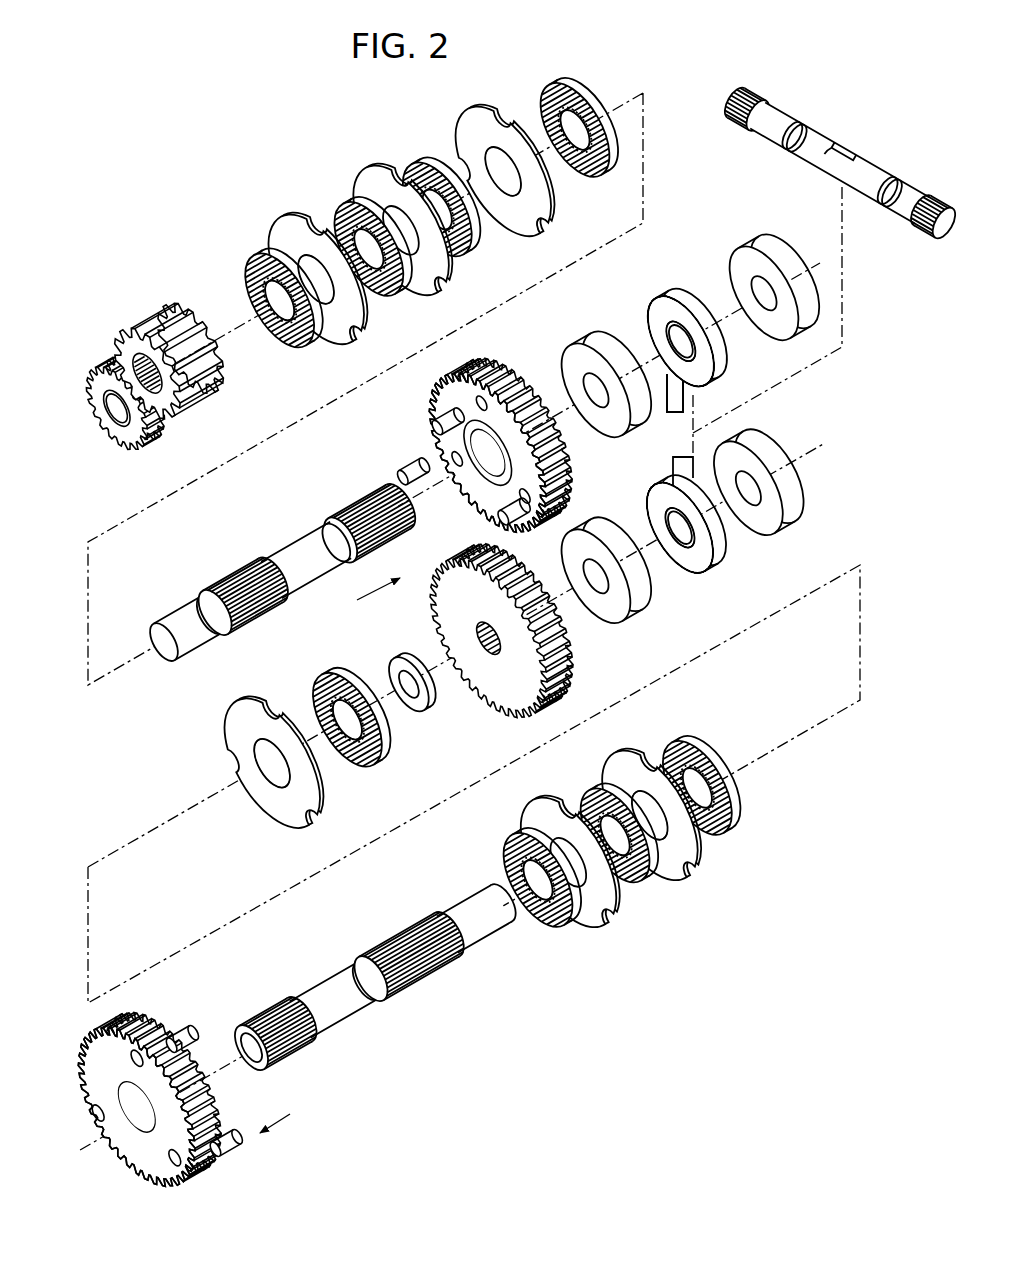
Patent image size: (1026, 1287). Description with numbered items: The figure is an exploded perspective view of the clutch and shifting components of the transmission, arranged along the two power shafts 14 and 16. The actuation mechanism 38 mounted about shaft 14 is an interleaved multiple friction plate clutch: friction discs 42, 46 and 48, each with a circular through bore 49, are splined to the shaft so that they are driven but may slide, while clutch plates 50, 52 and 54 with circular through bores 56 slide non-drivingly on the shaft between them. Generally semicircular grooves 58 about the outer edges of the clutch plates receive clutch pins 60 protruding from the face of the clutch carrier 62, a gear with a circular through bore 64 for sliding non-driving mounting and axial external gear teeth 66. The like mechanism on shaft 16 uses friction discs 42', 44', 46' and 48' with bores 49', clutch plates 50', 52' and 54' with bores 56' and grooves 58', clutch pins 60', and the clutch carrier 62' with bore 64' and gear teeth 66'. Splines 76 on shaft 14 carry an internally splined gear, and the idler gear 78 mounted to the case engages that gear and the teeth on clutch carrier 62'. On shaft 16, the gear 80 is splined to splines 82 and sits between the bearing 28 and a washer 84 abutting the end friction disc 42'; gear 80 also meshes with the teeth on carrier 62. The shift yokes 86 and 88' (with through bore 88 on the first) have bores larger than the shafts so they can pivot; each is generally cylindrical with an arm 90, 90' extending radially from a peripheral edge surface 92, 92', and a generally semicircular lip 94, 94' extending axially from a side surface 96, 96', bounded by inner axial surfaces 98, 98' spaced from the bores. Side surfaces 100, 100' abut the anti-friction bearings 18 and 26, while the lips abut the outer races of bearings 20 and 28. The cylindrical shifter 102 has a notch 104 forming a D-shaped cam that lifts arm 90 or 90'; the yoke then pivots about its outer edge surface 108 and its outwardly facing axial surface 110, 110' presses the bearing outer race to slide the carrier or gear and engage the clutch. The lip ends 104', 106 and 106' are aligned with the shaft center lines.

The shaft 14 is at (339, 527).
The shaft 16 is at (354, 1008).
The anti-friction bearing 18 is at (780, 270).
The bearing 20 is at (588, 348).
The anti-friction bearing 26 is at (803, 512).
The bearing 28 is at (636, 597).
The actuation mechanism 38 is at (360, 140).
The friction disc 42 is at (561, 125).
The friction disc 42' is at (352, 734).
The friction disc 44' is at (712, 796).
The friction disc 46 is at (350, 242).
The friction disc 46' is at (620, 862).
The friction disc 48 is at (263, 297).
The friction disc 48' is at (547, 899).
The circular through bore 49 is at (434, 245).
The circular through bore 49' is at (443, 838).
The clutch plate 50 is at (498, 170).
The clutch plate 50' is at (274, 776).
The clutch plate 52 is at (388, 227).
The clutch plate 52' is at (666, 815).
The clutch plate 54 is at (307, 276).
The clutch plate 54' is at (573, 881).
The circular through bore 56 is at (409, 263).
The circular through bore 56' is at (457, 832).
The groove 58 is at (450, 300).
The groove 58' is at (625, 769).
The clutch pin 60 is at (440, 469).
The clutch pin 60' is at (234, 1086).
The clutch carrier 62 is at (490, 445).
The clutch carrier 62' is at (218, 1111).
The circular through bore 64 is at (448, 449).
The circular through bore 64' is at (131, 1142).
The axial external gear teeth 66 is at (486, 453).
The axial external gear teeth 66' is at (137, 1087).
The splines 76 is at (247, 557).
The idler gear 78 is at (127, 458).
The gear 80 is at (509, 690).
The splines 82 is at (434, 978).
The washer 84 is at (426, 712).
The shift yoke 86 is at (705, 403).
The through bore 88 is at (673, 337).
The through bore 88' is at (686, 563).
The arm 90 is at (695, 413).
The arm 90' is at (658, 461).
The peripheral edge surface 92 is at (726, 341).
The peripheral edge surface 92' is at (707, 534).
The lip 94 is at (696, 303).
The lip 94' is at (679, 557).
The side surface 96 is at (656, 341).
The side surface 96' is at (681, 547).
The inner axial surface 98 is at (680, 325).
The inner axial surface 98' is at (667, 578).
The side surface 100 is at (750, 341).
The side surface 100' is at (714, 528).
The cylindrical shifter 102 is at (768, 116).
The notch 104 is at (855, 134).
The end of lip 104' is at (706, 547).
The end of lip 106 is at (633, 326).
The end of lip 106' is at (645, 509).
The outer edge surface 108 is at (697, 295).
The outwardly facing axial surface 110 is at (677, 305).
The outwardly facing axial surface 110' is at (644, 528).